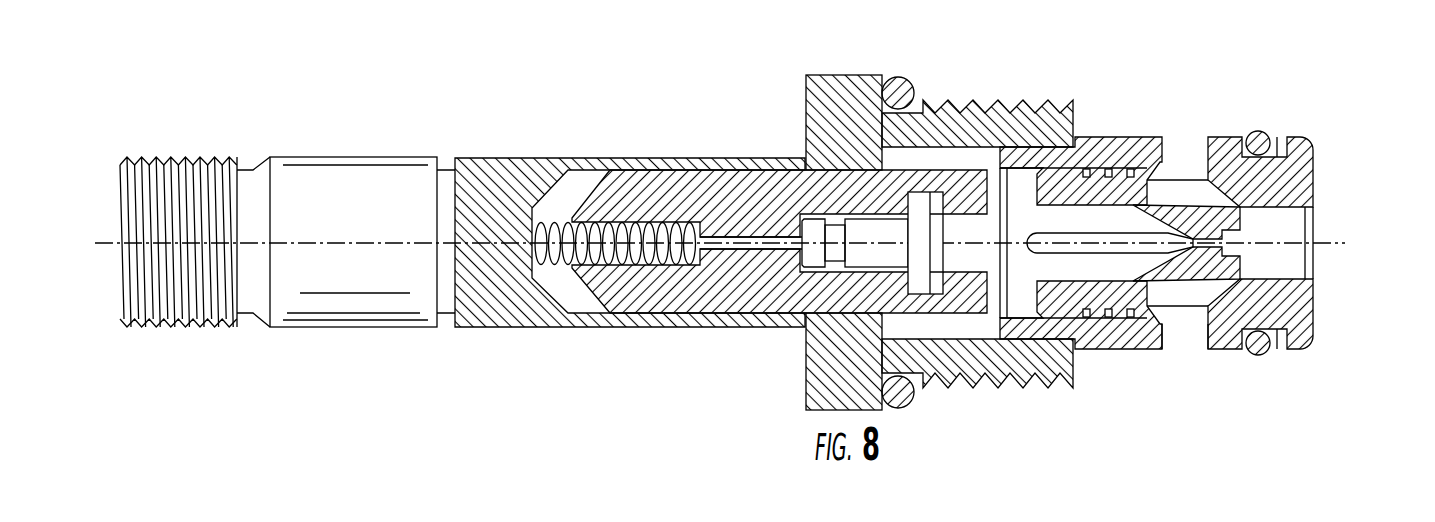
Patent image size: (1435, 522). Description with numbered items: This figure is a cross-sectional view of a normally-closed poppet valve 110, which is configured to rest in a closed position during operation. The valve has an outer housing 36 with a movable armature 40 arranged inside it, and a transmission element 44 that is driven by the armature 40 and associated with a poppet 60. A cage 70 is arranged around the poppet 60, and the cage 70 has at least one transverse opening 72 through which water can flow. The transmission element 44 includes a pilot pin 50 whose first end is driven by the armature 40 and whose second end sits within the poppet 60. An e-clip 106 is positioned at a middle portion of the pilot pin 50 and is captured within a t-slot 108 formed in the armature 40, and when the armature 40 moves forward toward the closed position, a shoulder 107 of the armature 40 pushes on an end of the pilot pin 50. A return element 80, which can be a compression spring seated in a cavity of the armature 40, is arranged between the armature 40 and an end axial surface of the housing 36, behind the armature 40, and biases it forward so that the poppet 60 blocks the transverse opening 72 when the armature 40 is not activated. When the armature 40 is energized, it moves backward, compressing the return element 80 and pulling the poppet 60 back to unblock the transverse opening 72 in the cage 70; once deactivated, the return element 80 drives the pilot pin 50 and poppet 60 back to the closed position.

The outer housing 36 is at (482, 185).
The armature 40 is at (733, 203).
The transmission element 44 is at (1333, 203).
The pilot pin 50 is at (1065, 223).
The poppet 60 is at (1265, 133).
The cage 70 is at (1290, 347).
The transverse opening 72 is at (1190, 335).
The return element 80 is at (600, 255).
The e-clip 106 is at (936, 295).
The shoulder 107 is at (758, 313).
The t-slot 108 is at (924, 185).
The normally-closed poppet valve 110 is at (1110, 93).